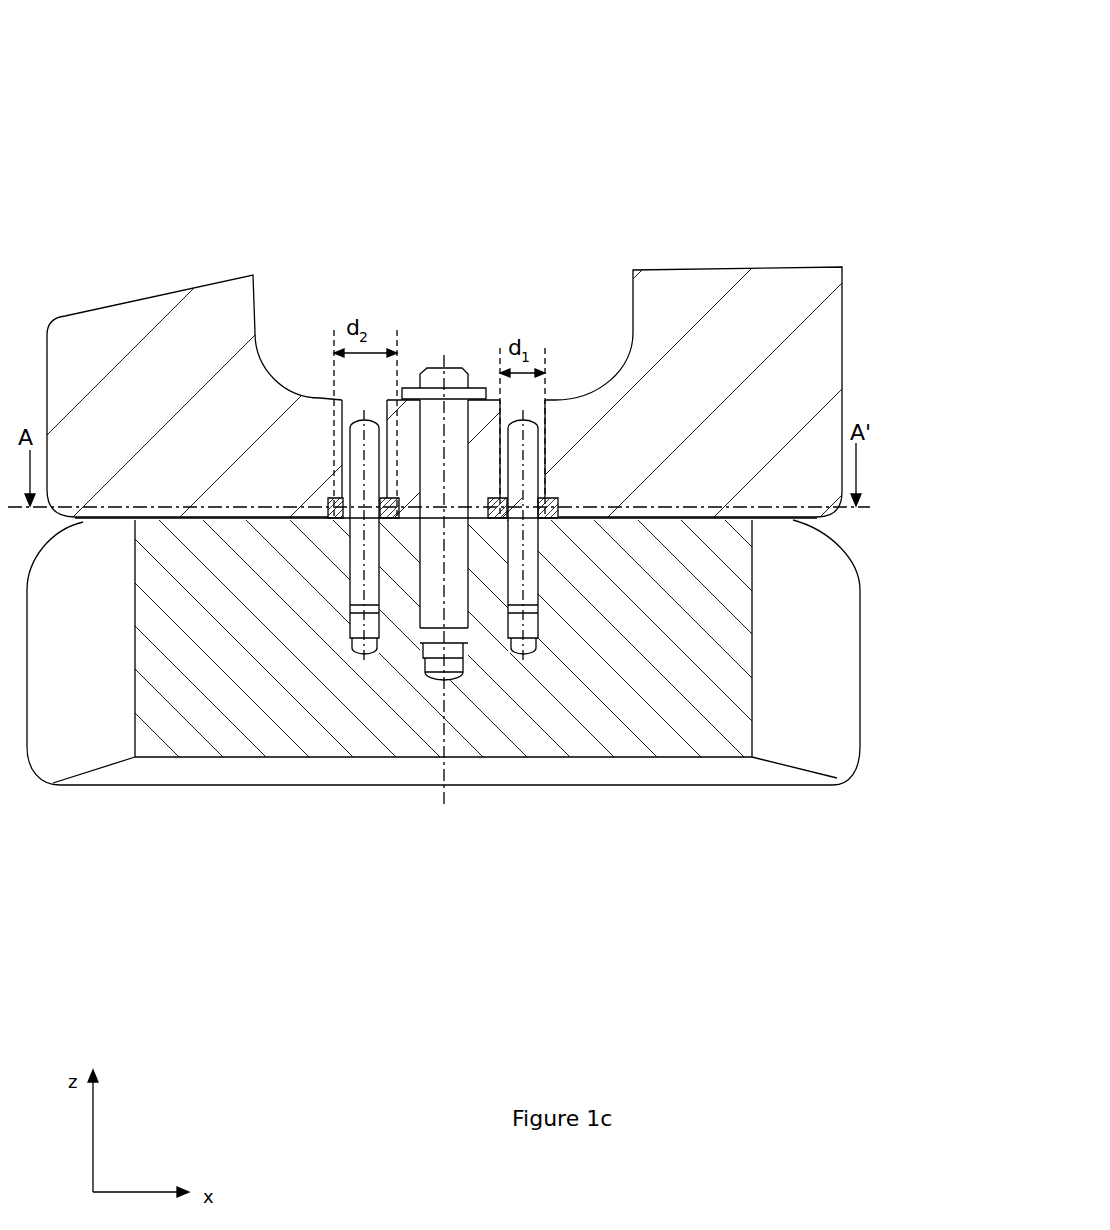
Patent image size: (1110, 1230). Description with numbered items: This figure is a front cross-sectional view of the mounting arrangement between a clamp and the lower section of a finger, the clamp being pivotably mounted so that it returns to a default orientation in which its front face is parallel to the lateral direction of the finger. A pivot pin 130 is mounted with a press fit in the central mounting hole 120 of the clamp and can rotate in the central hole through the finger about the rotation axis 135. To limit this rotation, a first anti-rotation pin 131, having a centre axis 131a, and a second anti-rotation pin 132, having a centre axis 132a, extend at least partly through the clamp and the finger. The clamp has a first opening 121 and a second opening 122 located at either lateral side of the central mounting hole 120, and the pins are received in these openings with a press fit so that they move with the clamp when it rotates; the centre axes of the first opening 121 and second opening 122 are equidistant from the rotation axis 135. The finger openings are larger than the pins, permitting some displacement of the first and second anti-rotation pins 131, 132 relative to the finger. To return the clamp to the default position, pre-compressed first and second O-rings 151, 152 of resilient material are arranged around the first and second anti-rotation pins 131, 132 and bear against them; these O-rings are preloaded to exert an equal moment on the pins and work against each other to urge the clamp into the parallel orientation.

The central mounting hole 120 is at (430, 652).
The first opening 121 is at (357, 645).
The second opening 122 is at (538, 627).
The pivot pin 130 is at (455, 380).
The first anti-rotation pin 131 is at (358, 438).
The centre axis 131a is at (363, 477).
The second anti-rotation pin 132 is at (528, 445).
The centre axis 132a is at (525, 487).
The rotation axis 135 is at (442, 770).
The first O-ring 151 is at (340, 520).
The second O-ring 152 is at (557, 513).